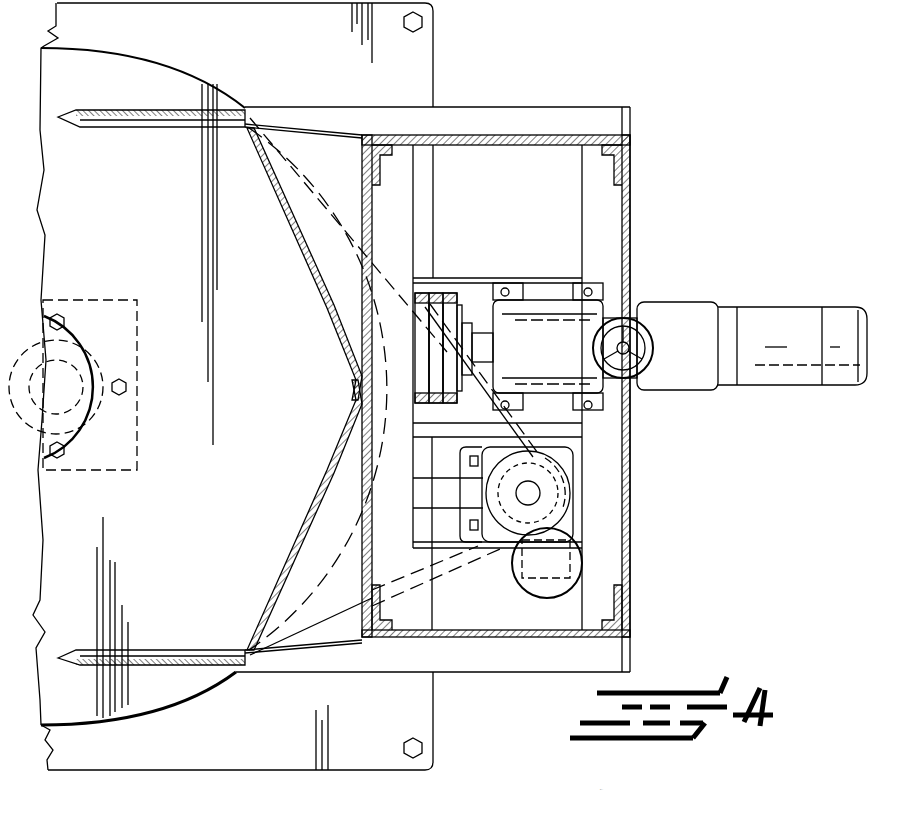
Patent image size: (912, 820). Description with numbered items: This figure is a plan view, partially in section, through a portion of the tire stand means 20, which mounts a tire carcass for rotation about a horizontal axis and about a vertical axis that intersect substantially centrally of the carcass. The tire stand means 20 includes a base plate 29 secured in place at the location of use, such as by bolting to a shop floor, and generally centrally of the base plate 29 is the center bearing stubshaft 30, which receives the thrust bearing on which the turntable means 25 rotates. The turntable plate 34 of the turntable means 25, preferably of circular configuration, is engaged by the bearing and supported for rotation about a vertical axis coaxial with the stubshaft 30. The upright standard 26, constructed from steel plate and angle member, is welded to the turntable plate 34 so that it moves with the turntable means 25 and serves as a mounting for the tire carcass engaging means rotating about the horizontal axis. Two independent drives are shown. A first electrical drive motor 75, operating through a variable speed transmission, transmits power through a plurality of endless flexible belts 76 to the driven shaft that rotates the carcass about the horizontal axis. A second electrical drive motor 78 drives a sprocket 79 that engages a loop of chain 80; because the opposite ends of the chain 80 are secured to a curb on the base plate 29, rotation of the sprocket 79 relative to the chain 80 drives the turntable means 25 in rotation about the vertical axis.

The tire stand means 20 is at (680, 215).
The turntable means 25 is at (229, 24).
The upright standard 26 is at (538, 130).
The base plate 29 is at (306, 64).
The center bearing stubshaft 30 is at (62, 378).
The turntable plate 34 is at (148, 222).
The first electrical drive motor 75 is at (803, 316).
The endless flexible belts 76 is at (420, 295).
The second electrical drive motor 78 is at (560, 558).
The sprocket 79 is at (500, 478).
The chain 80 is at (420, 580).